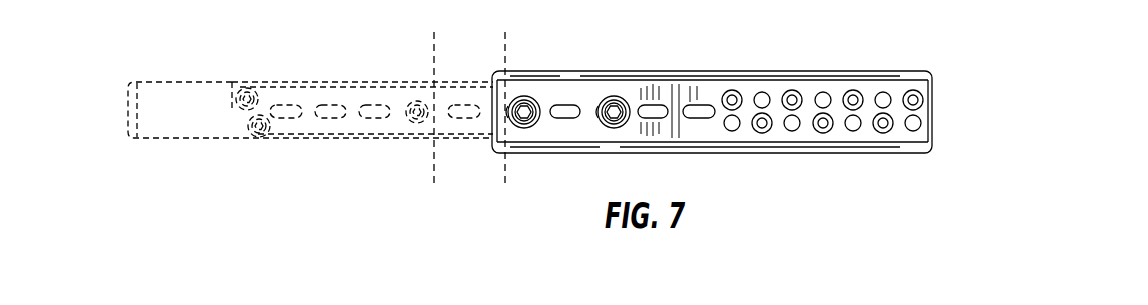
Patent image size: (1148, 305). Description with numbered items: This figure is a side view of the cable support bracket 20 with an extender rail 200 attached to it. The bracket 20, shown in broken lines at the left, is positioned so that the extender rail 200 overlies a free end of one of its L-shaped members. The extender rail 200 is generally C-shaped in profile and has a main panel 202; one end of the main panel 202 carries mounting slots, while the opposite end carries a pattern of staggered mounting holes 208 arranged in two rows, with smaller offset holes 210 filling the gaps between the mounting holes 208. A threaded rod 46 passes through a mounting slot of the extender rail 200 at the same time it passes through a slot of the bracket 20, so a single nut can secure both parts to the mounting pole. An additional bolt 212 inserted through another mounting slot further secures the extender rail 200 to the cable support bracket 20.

The cable support bracket 20 is at (372, 170).
The threaded rod 46 is at (524, 113).
The extender rail 200 is at (958, 74).
The main panel 202 is at (705, 90).
The mounting holes 208 is at (655, 110).
The offset holes 210 is at (733, 131).
The bolt 212 is at (614, 108).